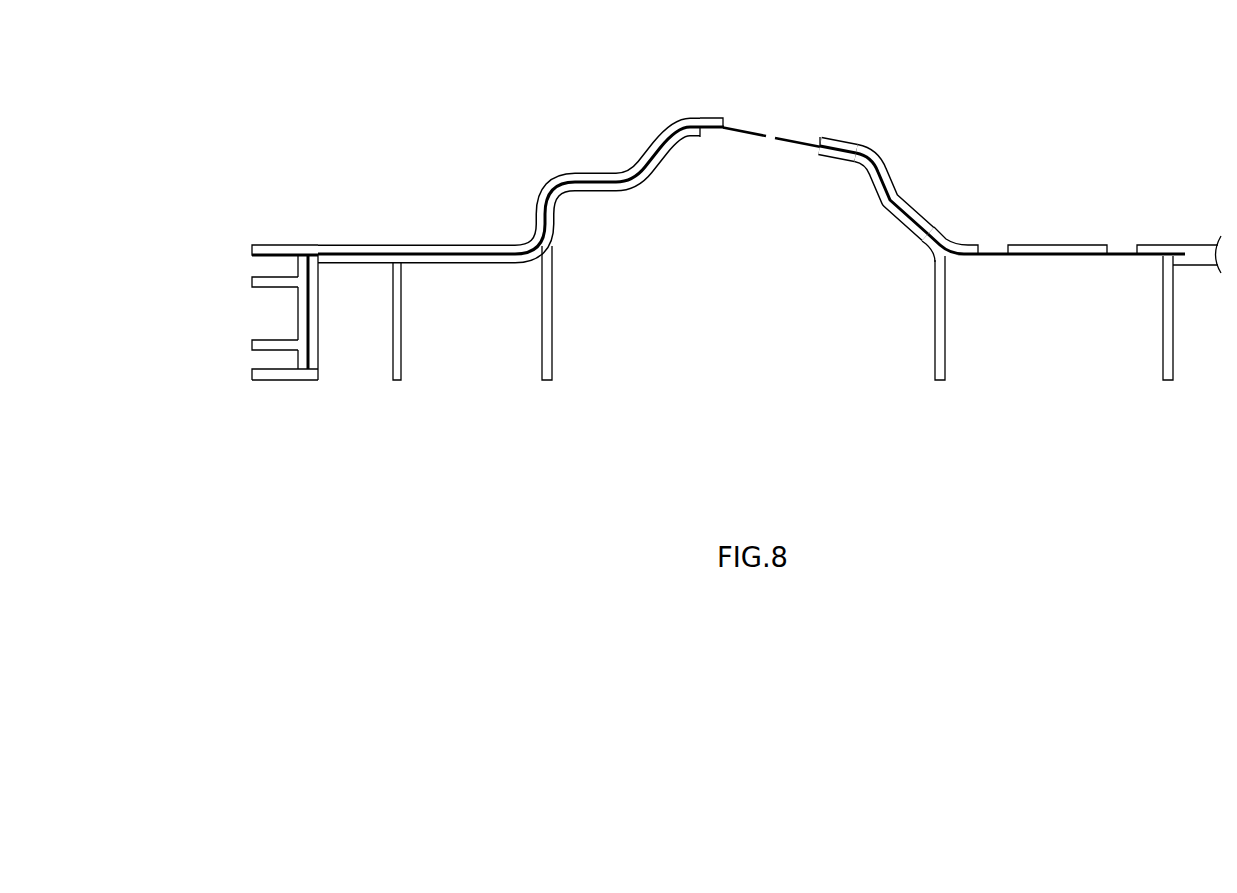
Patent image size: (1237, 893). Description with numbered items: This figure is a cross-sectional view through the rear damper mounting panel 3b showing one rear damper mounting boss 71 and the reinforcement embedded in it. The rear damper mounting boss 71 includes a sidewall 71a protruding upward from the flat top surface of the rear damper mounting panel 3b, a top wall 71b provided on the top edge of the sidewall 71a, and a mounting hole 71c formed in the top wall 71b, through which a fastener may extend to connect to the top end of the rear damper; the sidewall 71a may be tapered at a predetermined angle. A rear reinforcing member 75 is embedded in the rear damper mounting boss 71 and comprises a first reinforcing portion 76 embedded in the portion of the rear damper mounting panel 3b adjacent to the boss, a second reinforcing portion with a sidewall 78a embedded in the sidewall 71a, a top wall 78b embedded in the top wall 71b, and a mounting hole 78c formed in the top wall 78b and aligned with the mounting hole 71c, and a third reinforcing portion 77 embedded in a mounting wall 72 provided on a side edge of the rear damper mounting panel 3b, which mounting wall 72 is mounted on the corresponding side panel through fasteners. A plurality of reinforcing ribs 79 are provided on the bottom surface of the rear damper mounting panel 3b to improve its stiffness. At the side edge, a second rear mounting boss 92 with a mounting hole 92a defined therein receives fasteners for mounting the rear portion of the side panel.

The rear damper mounting panel 3b is at (1206, 229).
The rear damper mounting boss 71 is at (747, 153).
The sidewall 71a is at (890, 176).
The top wall 71b is at (819, 135).
The mounting hole 71c is at (702, 117).
The mounting wall 72 is at (322, 361).
The rear reinforcing member 75 is at (706, 158).
The first reinforcing portion 76 is at (464, 264).
The third reinforcing portion 77 is at (310, 313).
The sidewall 78a is at (884, 187).
The top wall 78b is at (806, 146).
The mounting hole 78c is at (769, 133).
The reinforcing rib 79 is at (393, 360).
The second rear mounting boss 92 is at (272, 277).
The mounting hole 92a is at (272, 318).